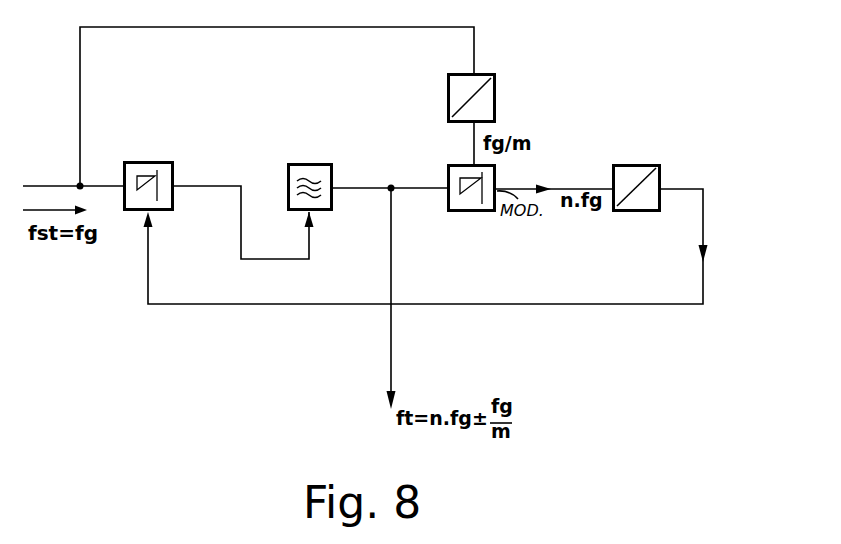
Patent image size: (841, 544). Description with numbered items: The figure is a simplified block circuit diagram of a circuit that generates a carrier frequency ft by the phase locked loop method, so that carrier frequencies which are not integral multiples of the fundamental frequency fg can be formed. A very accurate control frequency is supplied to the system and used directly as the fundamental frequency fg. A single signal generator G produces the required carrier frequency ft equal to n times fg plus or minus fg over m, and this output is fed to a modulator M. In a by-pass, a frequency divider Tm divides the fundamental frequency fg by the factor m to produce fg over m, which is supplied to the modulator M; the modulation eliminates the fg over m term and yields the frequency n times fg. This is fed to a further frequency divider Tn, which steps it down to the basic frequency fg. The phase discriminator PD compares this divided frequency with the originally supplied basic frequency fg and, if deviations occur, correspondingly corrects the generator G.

The phase discriminator PD is at (193, 130).
The signal generator G is at (348, 128).
The frequency divider Tm is at (503, 59).
The modulator M is at (472, 203).
The frequency divider Tn is at (677, 177).